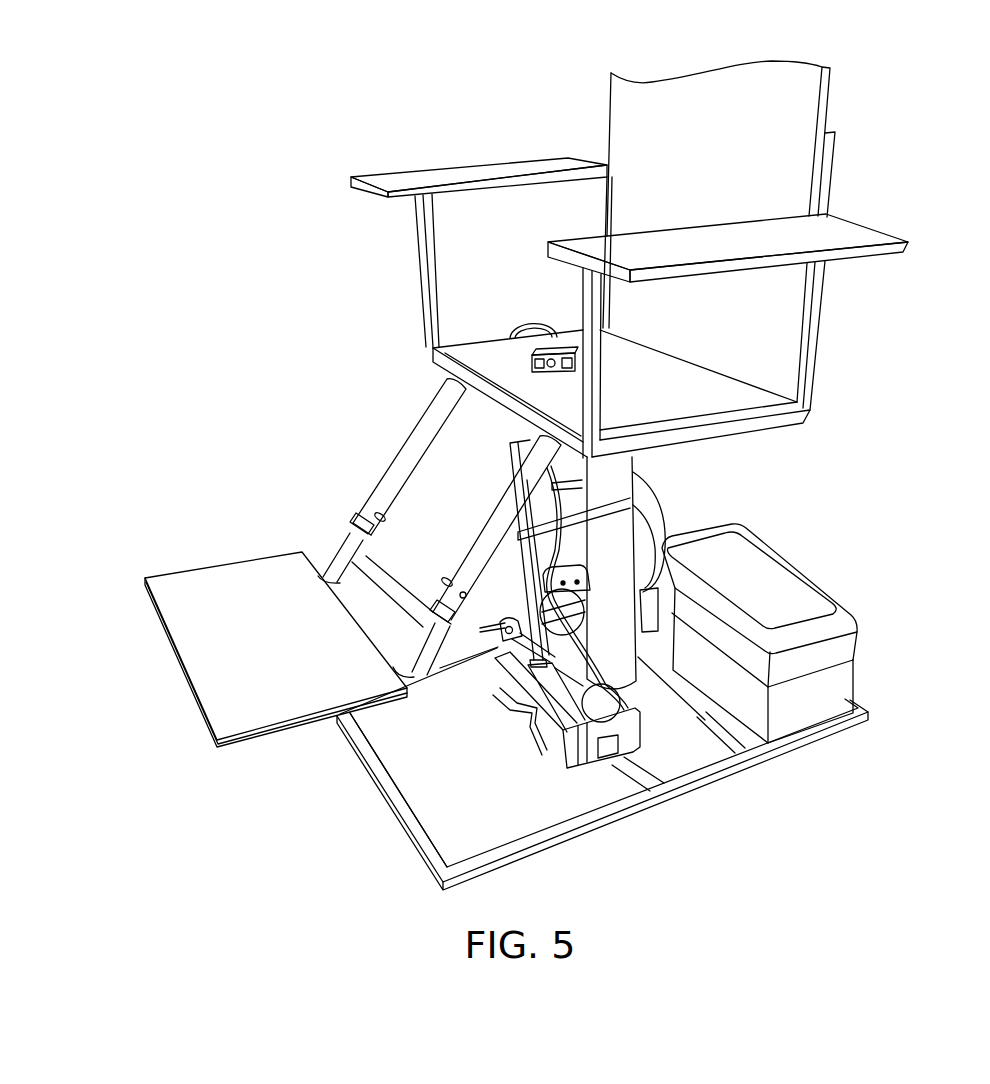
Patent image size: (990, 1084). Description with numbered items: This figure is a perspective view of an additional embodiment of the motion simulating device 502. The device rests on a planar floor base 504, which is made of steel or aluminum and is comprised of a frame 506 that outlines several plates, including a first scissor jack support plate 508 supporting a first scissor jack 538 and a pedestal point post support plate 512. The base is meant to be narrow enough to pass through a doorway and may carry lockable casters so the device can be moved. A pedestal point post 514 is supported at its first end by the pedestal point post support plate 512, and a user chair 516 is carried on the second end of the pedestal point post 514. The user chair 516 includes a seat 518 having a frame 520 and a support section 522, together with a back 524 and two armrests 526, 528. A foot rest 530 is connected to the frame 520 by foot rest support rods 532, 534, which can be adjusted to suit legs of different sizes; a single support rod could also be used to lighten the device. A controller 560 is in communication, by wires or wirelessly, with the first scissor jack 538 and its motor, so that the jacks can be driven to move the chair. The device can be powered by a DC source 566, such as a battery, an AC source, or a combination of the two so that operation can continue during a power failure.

The motion simulating device 502 is at (157, 523).
The floor base 504 is at (758, 790).
The frame 506 is at (638, 813).
The first scissor jack support plate 508 is at (459, 771).
The pedestal point post support plate 512 is at (668, 718).
The pedestal point post 514 is at (630, 473).
The user chair 516 is at (880, 362).
The seat 518 is at (838, 409).
The frame 520 is at (430, 352).
The support section 522 is at (635, 401).
The back 524 is at (697, 177).
The armrest 526 is at (703, 256).
The armrest 528 is at (477, 173).
The foot rest 530 is at (252, 656).
The foot rest support rod 532 is at (377, 487).
The foot rest support rod 534 is at (462, 529).
The first scissor jack 538 is at (497, 681).
The controller 560 is at (532, 362).
The DC source 566 is at (820, 586).